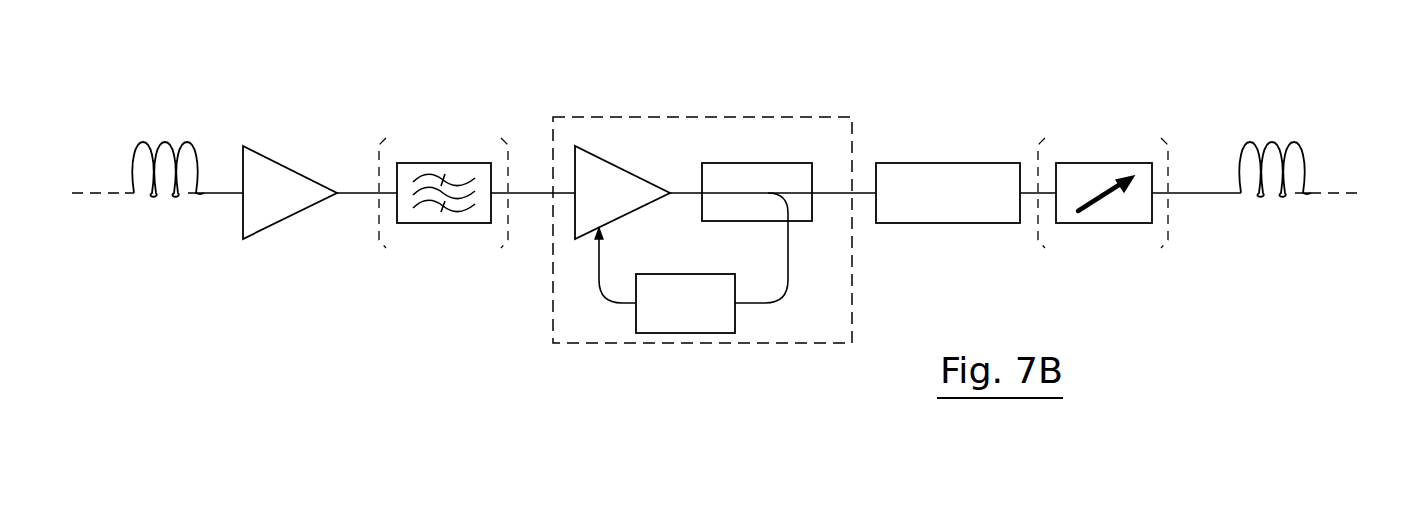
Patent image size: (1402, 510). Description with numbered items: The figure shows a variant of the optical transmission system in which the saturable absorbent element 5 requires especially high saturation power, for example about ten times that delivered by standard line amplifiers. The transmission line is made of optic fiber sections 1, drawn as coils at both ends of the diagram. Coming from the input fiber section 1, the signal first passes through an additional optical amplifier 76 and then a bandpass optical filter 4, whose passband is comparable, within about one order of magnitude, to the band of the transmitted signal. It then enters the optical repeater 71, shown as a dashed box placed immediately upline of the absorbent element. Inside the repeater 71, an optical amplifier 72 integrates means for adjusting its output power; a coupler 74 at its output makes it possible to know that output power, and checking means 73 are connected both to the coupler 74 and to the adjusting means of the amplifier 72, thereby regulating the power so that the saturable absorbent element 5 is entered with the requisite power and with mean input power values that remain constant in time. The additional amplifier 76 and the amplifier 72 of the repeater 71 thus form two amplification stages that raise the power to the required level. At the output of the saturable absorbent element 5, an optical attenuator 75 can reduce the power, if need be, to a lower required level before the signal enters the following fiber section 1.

The optic fiber section 1 is at (167, 141).
The additional optical amplifier 76 is at (283, 160).
The bandpass optical filter 4 is at (440, 141).
The optical repeater 71 is at (709, 116).
The optical amplifier 72 is at (615, 160).
The coupler 74 is at (775, 162).
The checking means 73 is at (676, 334).
The saturable absorbent element 5 is at (922, 158).
The optical attenuator 75 is at (1105, 145).